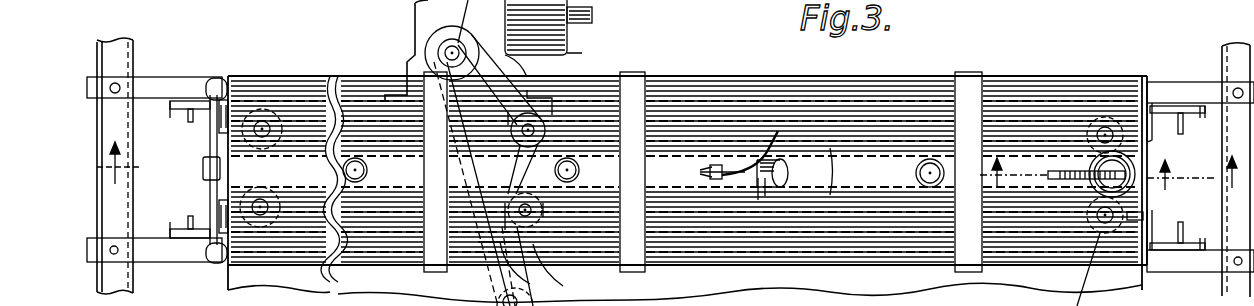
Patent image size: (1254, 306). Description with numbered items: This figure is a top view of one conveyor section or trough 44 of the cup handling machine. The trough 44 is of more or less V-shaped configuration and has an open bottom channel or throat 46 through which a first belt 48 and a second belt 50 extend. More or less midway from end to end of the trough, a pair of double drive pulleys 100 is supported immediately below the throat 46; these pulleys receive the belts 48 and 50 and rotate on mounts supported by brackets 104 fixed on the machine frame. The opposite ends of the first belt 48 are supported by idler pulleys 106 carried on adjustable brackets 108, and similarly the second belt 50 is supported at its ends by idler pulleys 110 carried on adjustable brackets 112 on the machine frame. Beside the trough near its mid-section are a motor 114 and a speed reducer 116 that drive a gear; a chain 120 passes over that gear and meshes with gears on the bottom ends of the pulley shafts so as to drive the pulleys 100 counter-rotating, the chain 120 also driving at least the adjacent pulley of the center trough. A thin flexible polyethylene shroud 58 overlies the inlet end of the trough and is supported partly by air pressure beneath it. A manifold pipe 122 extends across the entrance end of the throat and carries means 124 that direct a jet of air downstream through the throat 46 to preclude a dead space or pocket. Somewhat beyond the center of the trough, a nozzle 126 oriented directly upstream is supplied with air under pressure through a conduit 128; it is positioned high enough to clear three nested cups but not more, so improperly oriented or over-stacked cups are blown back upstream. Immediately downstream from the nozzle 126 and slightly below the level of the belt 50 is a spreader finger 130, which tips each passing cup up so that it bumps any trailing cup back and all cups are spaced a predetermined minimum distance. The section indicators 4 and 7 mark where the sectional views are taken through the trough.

The section line of FIG. 4 is at (670, 167).
The section line of FIG. 7 is at (1090, 174).
The trough 44 is at (912, 154).
The open bottom channel 46 is at (877, 170).
The first belt 48 is at (385, 193).
The second belt 50 is at (843, 148).
The shroud 58 is at (685, 294).
The double drive pulleys 100 is at (548, 134).
The brackets 104 is at (540, 270).
The idler pulleys 106 is at (262, 125).
The adjustable brackets 108 is at (200, 125).
The idler pulleys 110 is at (1103, 120).
The adjustable brackets 112 is at (1152, 137).
The motor 114 is at (572, 12).
The speed reducer 116 is at (415, 14).
The chain 120 is at (460, 143).
The manifold pipe 122 is at (207, 236).
The air jet means 124 is at (203, 167).
The nozzle 126 is at (708, 165).
The conduit 128 is at (746, 155).
The spreader finger 130 is at (766, 191).